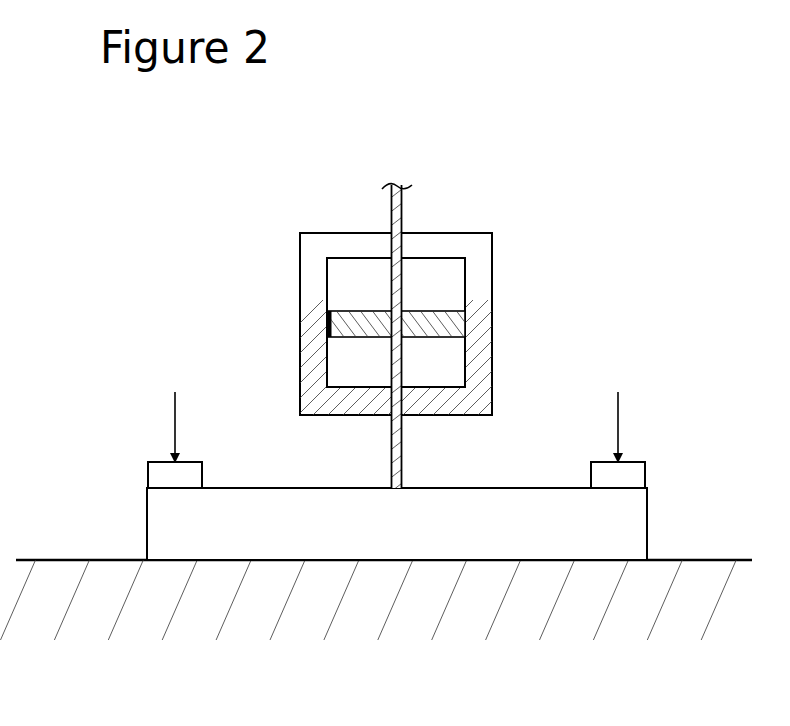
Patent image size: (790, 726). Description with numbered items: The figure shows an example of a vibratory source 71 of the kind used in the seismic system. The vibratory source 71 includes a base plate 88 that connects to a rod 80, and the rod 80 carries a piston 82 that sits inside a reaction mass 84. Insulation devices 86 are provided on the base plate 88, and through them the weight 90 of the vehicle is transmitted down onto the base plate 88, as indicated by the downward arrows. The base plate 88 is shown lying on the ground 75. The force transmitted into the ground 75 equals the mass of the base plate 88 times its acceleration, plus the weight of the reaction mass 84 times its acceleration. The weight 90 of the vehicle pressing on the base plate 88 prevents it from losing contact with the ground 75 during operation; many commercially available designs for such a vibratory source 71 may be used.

The vibratory source 71 is at (625, 268).
The ground 75 is at (360, 619).
The rod 80 is at (402, 208).
The piston 82 is at (418, 340).
The reaction mass 84 is at (492, 292).
The insulation devices 86 is at (148, 477).
The base plate 88 is at (148, 530).
The weight 90 is at (175, 418).